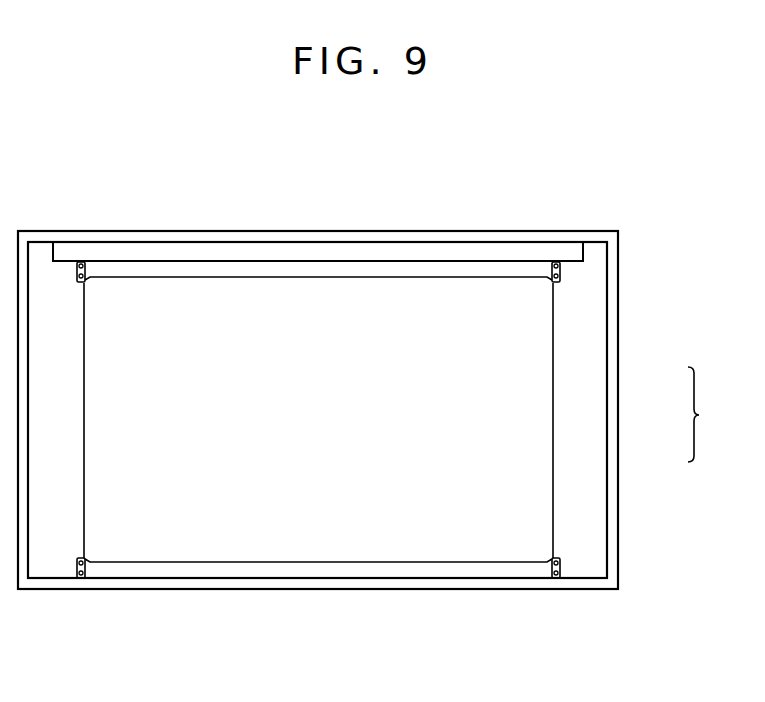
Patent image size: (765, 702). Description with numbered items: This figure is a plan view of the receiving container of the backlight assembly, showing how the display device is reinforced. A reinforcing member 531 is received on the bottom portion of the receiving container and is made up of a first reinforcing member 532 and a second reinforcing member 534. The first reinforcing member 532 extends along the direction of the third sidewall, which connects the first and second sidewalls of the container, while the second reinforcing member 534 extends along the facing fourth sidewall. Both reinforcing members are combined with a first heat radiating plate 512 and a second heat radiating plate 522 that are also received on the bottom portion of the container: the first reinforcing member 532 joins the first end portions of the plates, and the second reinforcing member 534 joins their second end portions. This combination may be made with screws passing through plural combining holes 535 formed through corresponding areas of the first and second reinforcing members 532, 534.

The first heat radiating plate 512 is at (52, 572).
The second heat radiating plate 522 is at (583, 572).
The reinforcing member 531 is at (714, 414).
The first reinforcing member 532 is at (561, 278).
The second reinforcing member 534 is at (562, 574).
The combining holes 535 is at (555, 578).